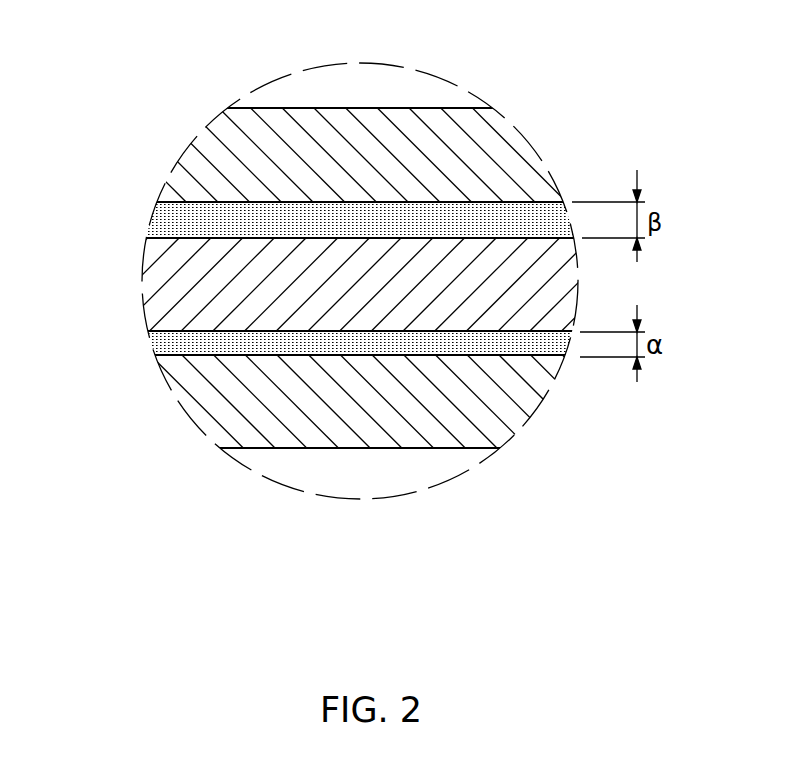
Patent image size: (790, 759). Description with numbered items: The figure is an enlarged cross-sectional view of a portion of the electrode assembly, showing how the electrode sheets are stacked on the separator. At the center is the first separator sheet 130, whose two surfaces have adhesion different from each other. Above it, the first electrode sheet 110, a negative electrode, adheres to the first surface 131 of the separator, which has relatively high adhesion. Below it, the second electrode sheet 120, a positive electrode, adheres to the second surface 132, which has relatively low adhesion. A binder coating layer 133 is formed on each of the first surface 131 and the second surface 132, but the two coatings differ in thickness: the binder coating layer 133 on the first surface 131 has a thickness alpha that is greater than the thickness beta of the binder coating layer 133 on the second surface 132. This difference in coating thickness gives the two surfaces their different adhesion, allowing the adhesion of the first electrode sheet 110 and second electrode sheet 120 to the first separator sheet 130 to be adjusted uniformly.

The first electrode sheet 110 is at (355, 148).
The second electrode sheet 120 is at (290, 418).
The first separator sheet 130 is at (158, 281).
The first surface 131 is at (167, 237).
The second surface 132 is at (168, 338).
The binder coating layer 133 is at (203, 218).